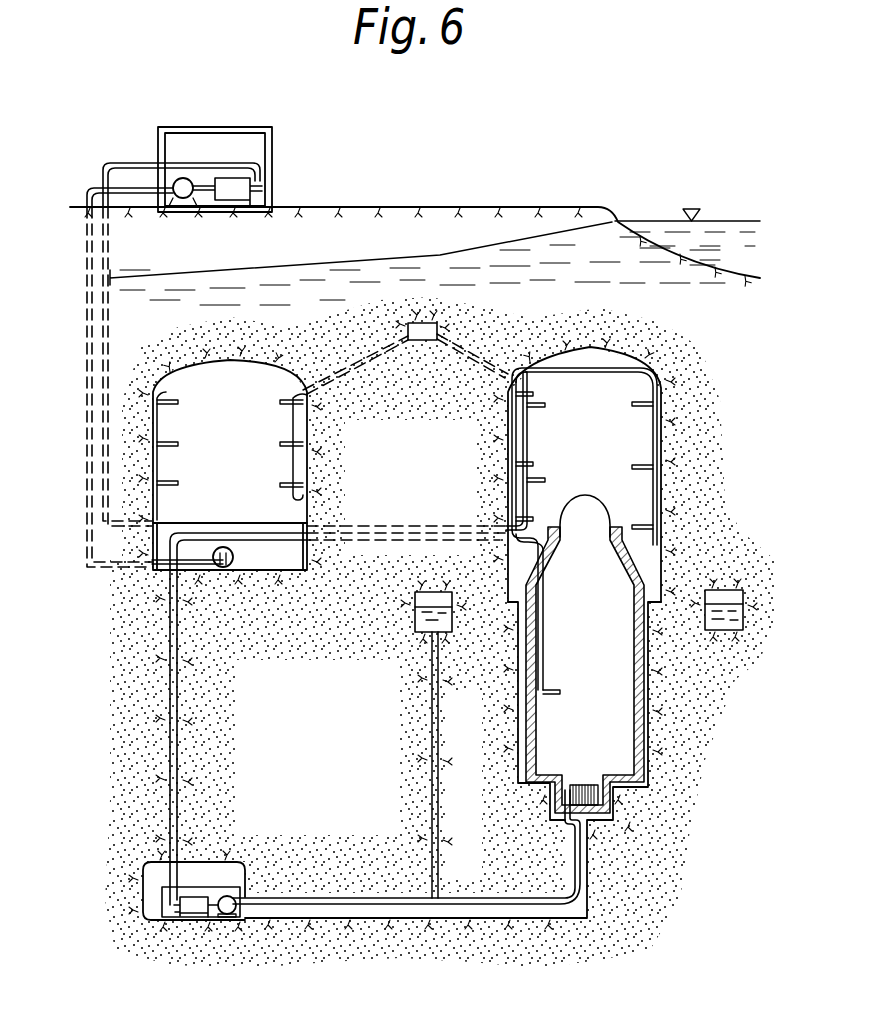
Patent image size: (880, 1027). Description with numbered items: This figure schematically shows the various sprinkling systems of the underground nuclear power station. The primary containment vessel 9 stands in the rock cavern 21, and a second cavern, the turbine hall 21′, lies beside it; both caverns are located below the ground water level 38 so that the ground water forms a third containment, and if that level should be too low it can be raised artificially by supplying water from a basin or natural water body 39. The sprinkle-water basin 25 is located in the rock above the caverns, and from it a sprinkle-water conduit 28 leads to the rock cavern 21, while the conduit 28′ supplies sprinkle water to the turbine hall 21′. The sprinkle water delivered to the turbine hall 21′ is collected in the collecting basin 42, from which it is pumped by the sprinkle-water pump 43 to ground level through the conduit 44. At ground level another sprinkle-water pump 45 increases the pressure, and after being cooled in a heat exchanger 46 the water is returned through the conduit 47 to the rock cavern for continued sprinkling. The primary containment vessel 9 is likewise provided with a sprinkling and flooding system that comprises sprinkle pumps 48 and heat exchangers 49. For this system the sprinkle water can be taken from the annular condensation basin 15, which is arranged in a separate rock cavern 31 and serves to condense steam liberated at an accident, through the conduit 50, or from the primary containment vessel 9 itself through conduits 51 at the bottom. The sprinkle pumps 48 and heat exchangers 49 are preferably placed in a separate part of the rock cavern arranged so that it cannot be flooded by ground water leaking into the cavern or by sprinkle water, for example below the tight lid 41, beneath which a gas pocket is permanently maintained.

The primary containment vessel 9 is at (640, 700).
The condensation basin 15 is at (452, 612).
The rock cavern 21 is at (592, 357).
The turbine hall 21′ is at (215, 372).
The sprinkle-water basin 25 is at (410, 328).
The sprinkle-water conduit 28 is at (657, 370).
The conduit 28′ is at (304, 405).
The rock cavern 31 is at (725, 592).
The ground water level 38 is at (440, 256).
The natural water body 39 is at (722, 220).
The tight lid 41 is at (228, 887).
The collecting basin 42 is at (288, 573).
The sprinkle-water pump 43 is at (227, 567).
The conduit 44 is at (88, 352).
The sprinkle-water pump 45 is at (185, 199).
The heat exchanger 46 is at (237, 201).
The conduit 47 is at (105, 410).
The sprinkle pump 48 is at (226, 913).
The heat exchanger 49 is at (192, 912).
The conduit 50 is at (432, 790).
The conduit 51 is at (571, 826).